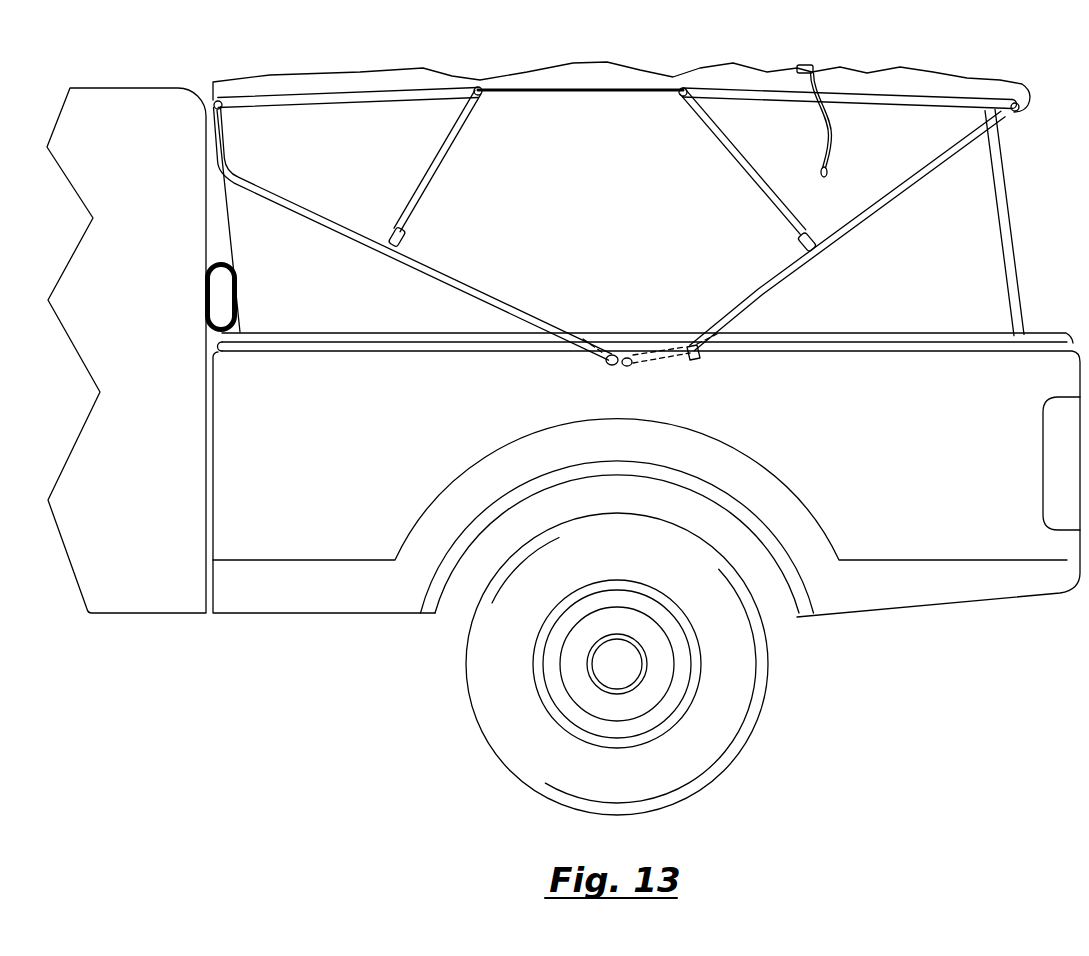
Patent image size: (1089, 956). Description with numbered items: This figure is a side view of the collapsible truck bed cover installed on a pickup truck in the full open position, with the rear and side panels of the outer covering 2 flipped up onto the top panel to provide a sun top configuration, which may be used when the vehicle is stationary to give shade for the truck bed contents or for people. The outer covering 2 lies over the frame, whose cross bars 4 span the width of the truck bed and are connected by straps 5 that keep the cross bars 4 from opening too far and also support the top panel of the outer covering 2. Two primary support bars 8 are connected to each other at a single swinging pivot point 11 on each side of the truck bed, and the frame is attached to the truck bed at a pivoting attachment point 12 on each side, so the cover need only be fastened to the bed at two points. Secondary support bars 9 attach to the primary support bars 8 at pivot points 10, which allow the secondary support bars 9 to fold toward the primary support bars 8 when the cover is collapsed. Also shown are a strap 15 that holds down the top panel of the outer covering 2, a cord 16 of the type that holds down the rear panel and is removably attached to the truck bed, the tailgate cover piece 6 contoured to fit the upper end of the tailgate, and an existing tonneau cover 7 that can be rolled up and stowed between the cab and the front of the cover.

The outer covering 2 is at (223, 193).
The cross bar 4 is at (213, 98).
The strap 5 is at (320, 100).
The tailgate cover piece 6 is at (810, 68).
The tonneau cover 7 is at (213, 262).
The primary support bar 8 is at (345, 233).
The secondary support bar 9 is at (442, 163).
The pivot point 10 is at (402, 238).
The swinging pivot point 11 is at (613, 367).
The pivoting attachment point 12 is at (697, 358).
The strap 15 is at (1002, 187).
The cord 16 is at (827, 137).